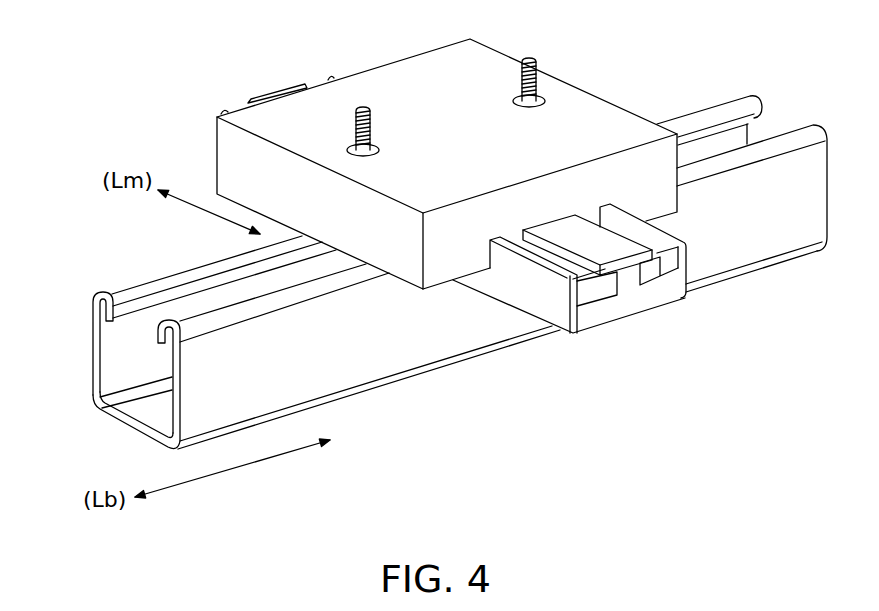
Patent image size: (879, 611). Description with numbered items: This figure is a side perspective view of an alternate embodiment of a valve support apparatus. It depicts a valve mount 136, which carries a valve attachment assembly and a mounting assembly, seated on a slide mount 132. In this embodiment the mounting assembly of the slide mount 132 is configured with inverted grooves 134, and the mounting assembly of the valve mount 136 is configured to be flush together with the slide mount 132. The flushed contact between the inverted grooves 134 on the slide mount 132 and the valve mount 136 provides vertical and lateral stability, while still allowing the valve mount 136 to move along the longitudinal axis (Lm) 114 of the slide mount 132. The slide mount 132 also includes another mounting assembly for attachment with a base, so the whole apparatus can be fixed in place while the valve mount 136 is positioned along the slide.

The longitudinal axis (Lm) of the slide mount 114 is at (201, 210).
The slide mount 132 is at (576, 333).
The inverted grooves 134 is at (648, 266).
The valve mount 136 is at (612, 186).